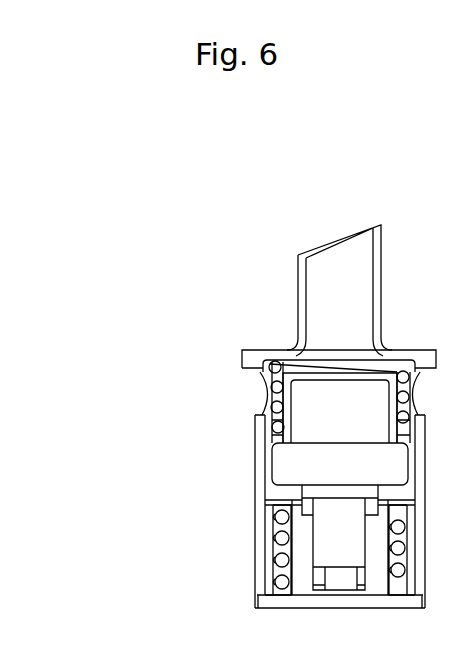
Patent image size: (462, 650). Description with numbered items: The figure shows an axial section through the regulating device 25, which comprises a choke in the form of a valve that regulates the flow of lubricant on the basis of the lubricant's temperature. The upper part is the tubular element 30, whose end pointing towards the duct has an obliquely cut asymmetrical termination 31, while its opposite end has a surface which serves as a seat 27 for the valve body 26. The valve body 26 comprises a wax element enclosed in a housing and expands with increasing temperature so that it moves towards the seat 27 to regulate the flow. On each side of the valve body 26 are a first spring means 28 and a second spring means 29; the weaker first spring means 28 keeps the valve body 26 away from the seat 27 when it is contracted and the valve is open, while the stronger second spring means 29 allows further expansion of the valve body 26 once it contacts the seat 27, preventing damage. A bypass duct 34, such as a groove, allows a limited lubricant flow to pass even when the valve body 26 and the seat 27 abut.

The regulating device 25 is at (157, 240).
The valve body 26 is at (338, 463).
The seat 27 is at (269, 367).
The first spring means 28 is at (272, 427).
The second spring means 29 is at (275, 517).
The tubular element 30 is at (298, 298).
The obliquely cut asymmetrical termination 31 is at (340, 240).
The bypass duct 34 is at (290, 380).